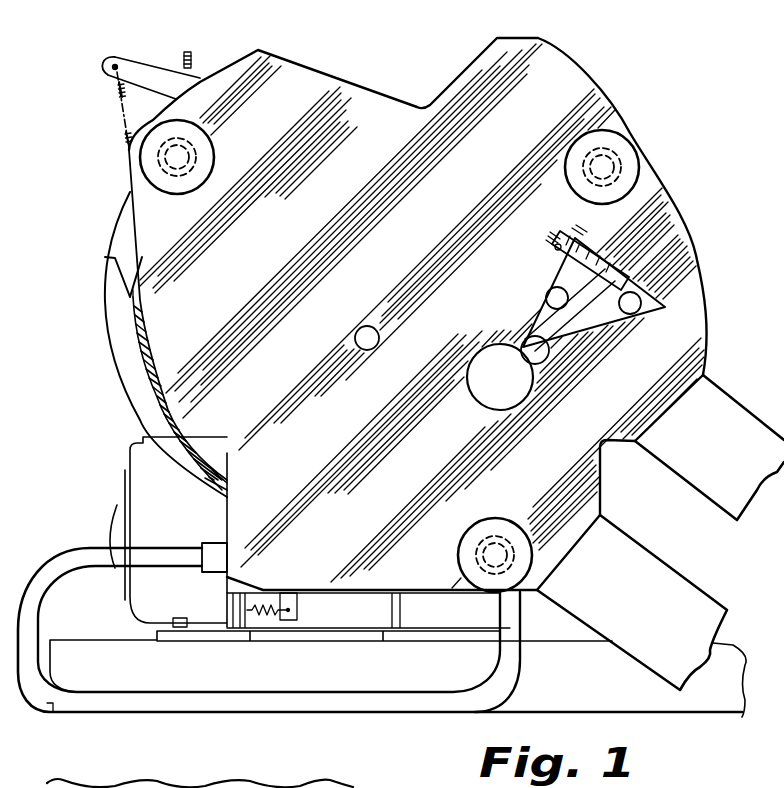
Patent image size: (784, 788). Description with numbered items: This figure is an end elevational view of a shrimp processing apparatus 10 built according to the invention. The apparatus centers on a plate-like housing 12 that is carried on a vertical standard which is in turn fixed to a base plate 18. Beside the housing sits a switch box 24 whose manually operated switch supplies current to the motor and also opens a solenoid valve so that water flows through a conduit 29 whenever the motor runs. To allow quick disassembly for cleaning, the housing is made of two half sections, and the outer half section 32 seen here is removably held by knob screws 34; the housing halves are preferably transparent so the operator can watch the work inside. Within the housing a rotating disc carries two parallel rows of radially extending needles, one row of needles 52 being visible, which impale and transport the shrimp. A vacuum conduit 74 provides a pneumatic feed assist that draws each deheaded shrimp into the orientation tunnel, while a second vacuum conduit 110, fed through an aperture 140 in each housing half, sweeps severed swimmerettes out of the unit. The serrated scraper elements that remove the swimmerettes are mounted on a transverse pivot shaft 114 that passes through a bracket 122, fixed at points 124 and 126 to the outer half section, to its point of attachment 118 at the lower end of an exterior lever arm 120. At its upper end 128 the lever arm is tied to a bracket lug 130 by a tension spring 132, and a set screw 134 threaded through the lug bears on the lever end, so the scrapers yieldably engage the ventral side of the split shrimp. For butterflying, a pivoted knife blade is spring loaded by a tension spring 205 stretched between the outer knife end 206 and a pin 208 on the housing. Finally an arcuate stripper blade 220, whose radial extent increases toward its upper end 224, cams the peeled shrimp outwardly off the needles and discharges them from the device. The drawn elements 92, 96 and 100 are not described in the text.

The shrimp processing apparatus 10 is at (104, 186).
The housing 12 is at (401, 265).
The base plate 18 is at (374, 640).
The switch box 24 is at (150, 492).
The conduit 29 is at (70, 567).
The outer half section 32 is at (168, 227).
The knob screws 34 is at (210, 157).
The needles 52 is at (212, 488).
The vacuum conduit 74 is at (725, 459).
The screw 92 is at (200, 75).
The spring 96 is at (117, 90).
The lever 100 is at (187, 58).
The second vacuum conduit 110 is at (657, 612).
The transverse pivot shaft 114 is at (500, 377).
The point of attachment 118 is at (522, 352).
The lever arm 120 is at (572, 320).
The bracket 122 is at (582, 340).
The bracket fixing point 124 is at (547, 297).
The bracket fixing point 126 is at (645, 300).
The upper end of lever arm 128 is at (628, 272).
The bracket lug 130 is at (580, 242).
The tension spring 132 is at (597, 255).
The set screw 134 is at (556, 248).
The aperture 140 is at (487, 404).
The tension spring 205 is at (268, 627).
The outer knife end 206 is at (298, 610).
The pin 208 is at (262, 592).
The stripper blade 220 is at (140, 404).
The upper end of stripper blade 224 is at (137, 378).